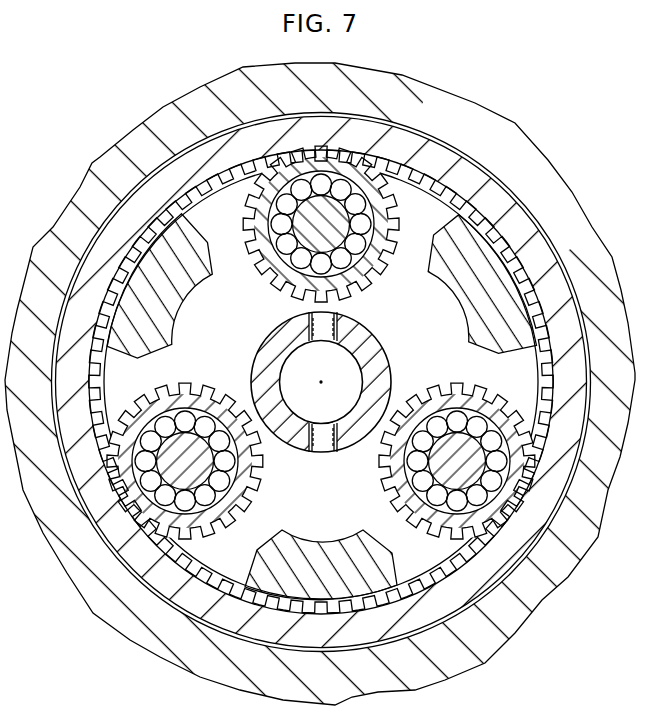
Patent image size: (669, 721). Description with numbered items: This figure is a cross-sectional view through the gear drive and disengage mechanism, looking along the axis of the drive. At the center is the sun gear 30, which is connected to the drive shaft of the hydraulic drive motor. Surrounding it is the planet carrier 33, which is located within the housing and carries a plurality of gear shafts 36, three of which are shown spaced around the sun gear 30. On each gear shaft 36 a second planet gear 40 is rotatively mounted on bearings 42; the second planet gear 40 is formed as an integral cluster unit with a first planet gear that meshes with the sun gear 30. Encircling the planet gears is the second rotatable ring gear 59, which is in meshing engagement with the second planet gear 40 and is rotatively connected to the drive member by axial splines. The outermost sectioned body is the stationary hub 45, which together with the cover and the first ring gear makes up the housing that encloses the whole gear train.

The sun gear 30 is at (357, 332).
The planet carrier 33 is at (187, 287).
The gear shafts 36 is at (258, 220).
The second planet gear 40 is at (263, 270).
The bearings 42 is at (363, 202).
The stationary hub 45 is at (592, 507).
The second rotatable ring gear 59 is at (492, 187).